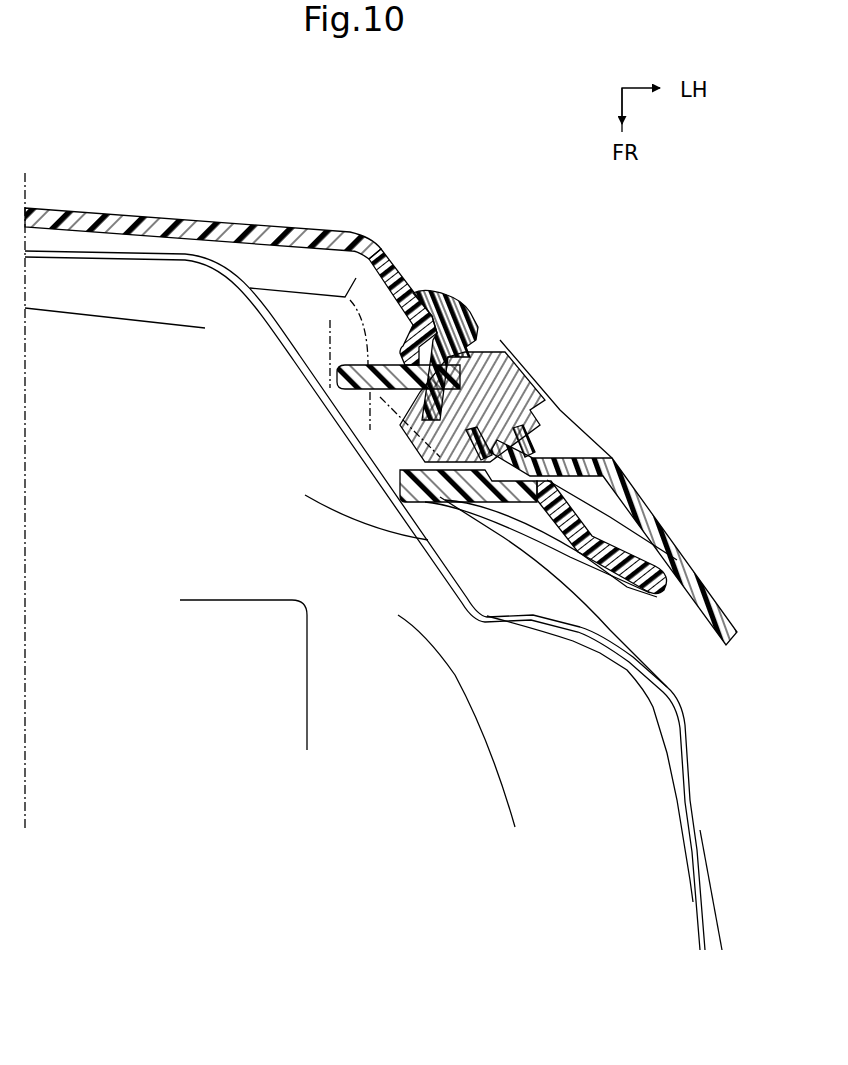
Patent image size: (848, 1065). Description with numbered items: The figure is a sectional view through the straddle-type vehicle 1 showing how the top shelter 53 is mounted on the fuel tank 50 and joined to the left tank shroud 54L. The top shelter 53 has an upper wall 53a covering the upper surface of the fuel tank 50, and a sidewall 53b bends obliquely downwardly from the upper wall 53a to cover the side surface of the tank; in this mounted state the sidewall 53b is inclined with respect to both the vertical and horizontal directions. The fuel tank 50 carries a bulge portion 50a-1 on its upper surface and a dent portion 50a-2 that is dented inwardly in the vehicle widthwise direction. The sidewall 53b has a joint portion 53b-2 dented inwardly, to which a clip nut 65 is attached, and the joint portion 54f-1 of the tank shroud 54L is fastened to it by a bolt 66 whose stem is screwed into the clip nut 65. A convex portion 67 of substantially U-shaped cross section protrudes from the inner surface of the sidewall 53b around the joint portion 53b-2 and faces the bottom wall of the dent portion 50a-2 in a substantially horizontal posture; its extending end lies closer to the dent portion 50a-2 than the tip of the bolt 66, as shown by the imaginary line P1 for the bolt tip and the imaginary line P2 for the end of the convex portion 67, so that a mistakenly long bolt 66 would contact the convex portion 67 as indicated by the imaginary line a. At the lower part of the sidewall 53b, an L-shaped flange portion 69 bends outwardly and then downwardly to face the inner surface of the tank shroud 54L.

The vehicle door 1 is at (399, 148).
The fuel tank 50 is at (365, 552).
The bulge portion 50a-1 is at (88, 252).
The dent portion 50a-2 is at (407, 500).
The top shelter 53 is at (336, 279).
The upper wall 53a is at (263, 222).
The sidewall 53b is at (407, 288).
The joint portion 53b-2 is at (505, 438).
The joint portion 54f-1 is at (533, 457).
The tank shroud 54L is at (645, 480).
The clip nut 65 is at (470, 340).
The bolt 66 is at (507, 375).
The convex portion 67 is at (483, 510).
The flange portion 69 is at (656, 568).
The imaginary line a is at (370, 470).
The imaginary line P1 is at (466, 596).
The imaginary line P2 is at (437, 553).